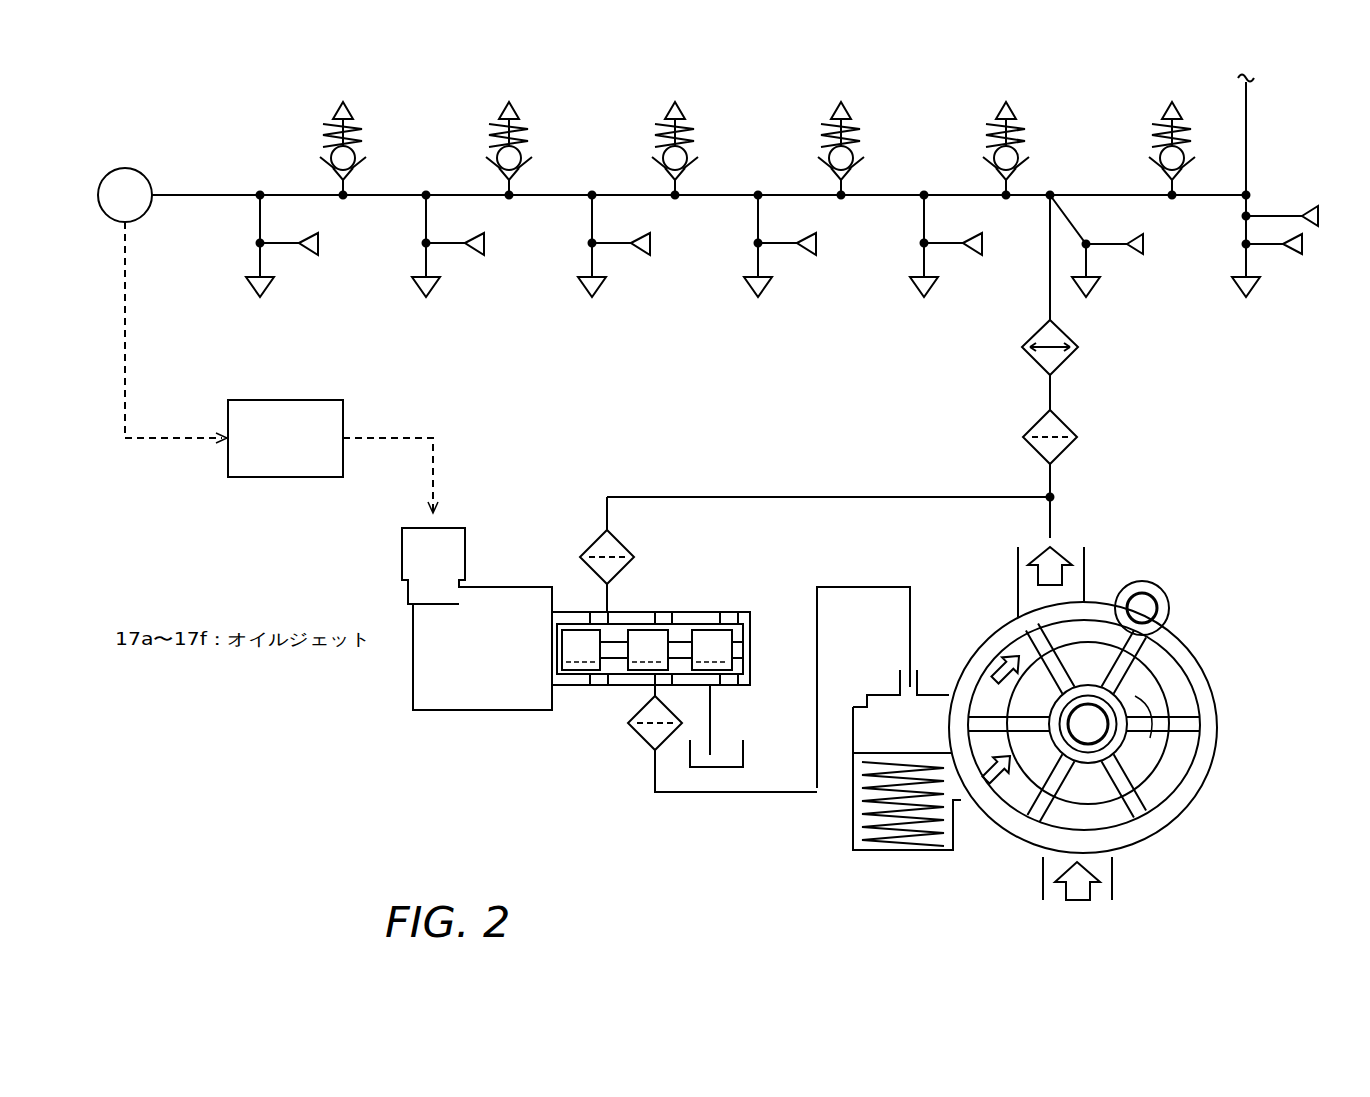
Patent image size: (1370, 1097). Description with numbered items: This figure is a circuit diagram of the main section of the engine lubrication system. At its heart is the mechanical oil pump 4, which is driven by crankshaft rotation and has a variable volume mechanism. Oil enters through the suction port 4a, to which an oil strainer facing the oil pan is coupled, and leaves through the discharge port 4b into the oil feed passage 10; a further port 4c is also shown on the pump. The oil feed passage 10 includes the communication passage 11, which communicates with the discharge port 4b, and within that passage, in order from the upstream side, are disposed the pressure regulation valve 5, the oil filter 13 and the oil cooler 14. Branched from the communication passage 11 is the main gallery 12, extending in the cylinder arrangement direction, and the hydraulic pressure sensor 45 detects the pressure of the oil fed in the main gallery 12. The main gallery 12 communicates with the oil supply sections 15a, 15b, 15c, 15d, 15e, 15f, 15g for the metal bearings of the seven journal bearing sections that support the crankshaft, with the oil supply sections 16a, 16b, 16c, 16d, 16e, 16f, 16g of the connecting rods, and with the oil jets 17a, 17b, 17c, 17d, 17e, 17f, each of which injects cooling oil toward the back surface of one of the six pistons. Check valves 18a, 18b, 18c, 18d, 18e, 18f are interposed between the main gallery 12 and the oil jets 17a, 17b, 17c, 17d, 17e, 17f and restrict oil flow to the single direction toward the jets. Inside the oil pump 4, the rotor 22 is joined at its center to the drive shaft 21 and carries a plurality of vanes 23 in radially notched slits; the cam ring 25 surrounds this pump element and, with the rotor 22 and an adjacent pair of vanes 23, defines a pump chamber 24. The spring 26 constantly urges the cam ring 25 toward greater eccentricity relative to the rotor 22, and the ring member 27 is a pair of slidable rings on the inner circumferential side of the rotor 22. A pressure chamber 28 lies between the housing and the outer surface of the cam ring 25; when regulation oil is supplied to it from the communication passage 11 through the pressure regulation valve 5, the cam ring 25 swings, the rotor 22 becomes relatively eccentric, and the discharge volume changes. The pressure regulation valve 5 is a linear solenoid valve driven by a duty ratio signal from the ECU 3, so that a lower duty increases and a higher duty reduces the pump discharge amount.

The ECU 3 is at (247, 398).
The oil pump 4 is at (1120, 709).
The suction port 4a is at (1112, 870).
The discharge port 4b is at (1015, 568).
The relief port 4c is at (1146, 598).
The pressure regulation valve 5 is at (450, 712).
The oil feed passage 10 is at (1262, 116).
The communication passage 11 is at (1246, 165).
The main gallery 12 is at (205, 193).
The oil filter 13 is at (1078, 437).
The oil cooler 14 is at (1078, 347).
The oil supply section 15a is at (320, 243).
The oil supply section 15b is at (486, 243).
The oil supply section 15c is at (652, 243).
The oil supply section 15d is at (818, 243).
The oil supply section 15e is at (984, 243).
The oil supply section 15f is at (1144, 243).
The oil supply section 15g is at (1303, 243).
The oil supply section 16a is at (274, 285).
The oil supply section 16b is at (440, 285).
The oil supply section 16c is at (606, 285).
The oil supply section 16d is at (772, 285).
The oil supply section 16e is at (938, 285).
The oil supply section 16f is at (1100, 285).
The oil supply section 16g is at (1260, 285).
The oil jet 17a is at (337, 107).
The oil jet 17b is at (503, 107).
The oil jet 17c is at (669, 107).
The oil jet 17d is at (835, 107).
The oil jet 17e is at (1000, 107).
The oil jet 17f is at (1164, 107).
The check valve 18a is at (325, 164).
The check valve 18b is at (491, 164).
The check valve 18c is at (657, 164).
The check valve 18d is at (823, 164).
The check valve 18e is at (988, 164).
The check valve 18f is at (1150, 164).
The drive shaft 21 is at (1105, 740).
The rotor 22 is at (1140, 765).
The vane 23 is at (1150, 704).
The pump chamber 24 is at (1150, 797).
The cam ring 25 is at (1013, 823).
The spring 26 is at (870, 815).
The ring member 27 is at (1031, 777).
The pressure chamber 28 is at (883, 700).
The hydraulic pressure sensor 45 is at (124, 168).